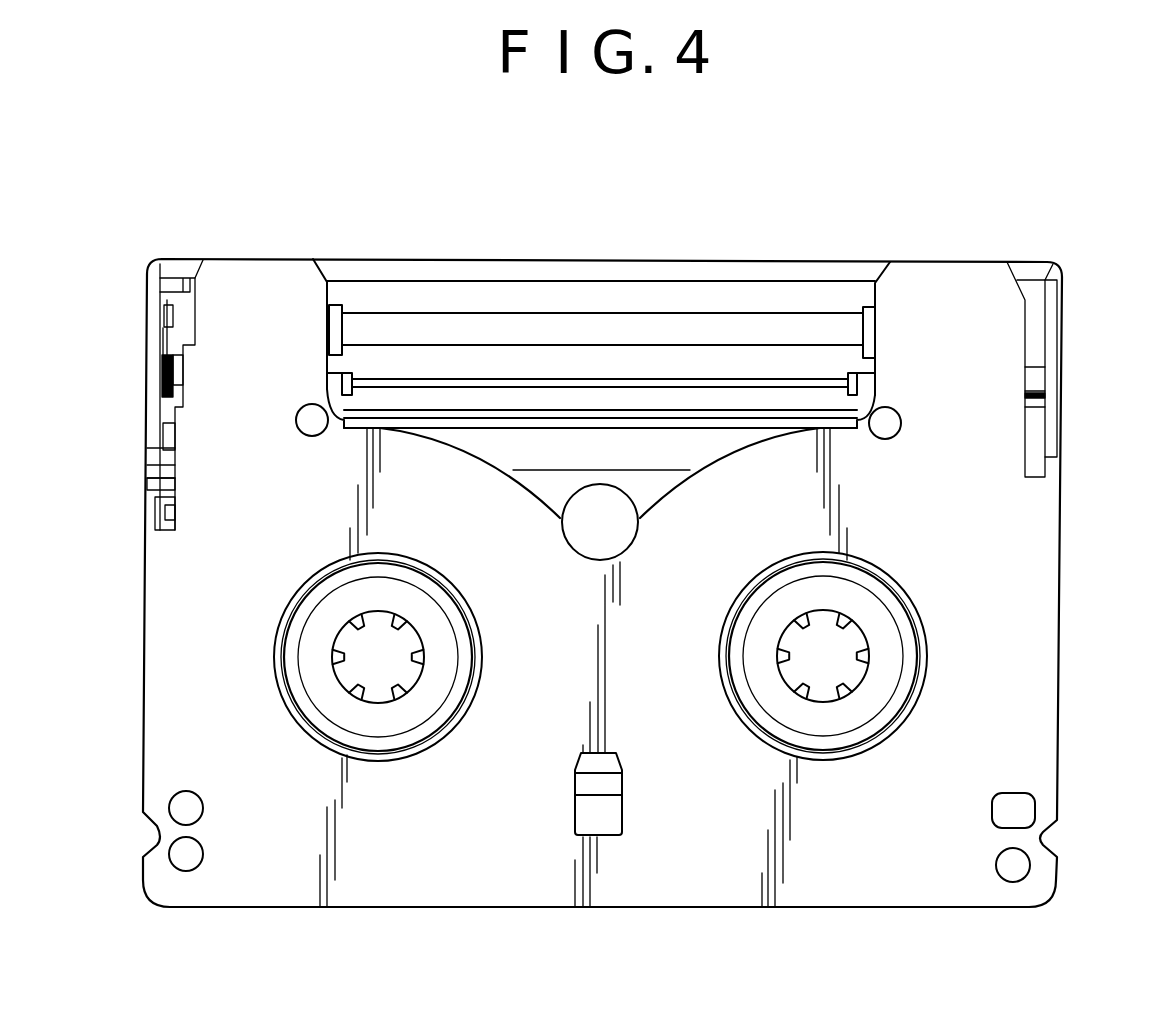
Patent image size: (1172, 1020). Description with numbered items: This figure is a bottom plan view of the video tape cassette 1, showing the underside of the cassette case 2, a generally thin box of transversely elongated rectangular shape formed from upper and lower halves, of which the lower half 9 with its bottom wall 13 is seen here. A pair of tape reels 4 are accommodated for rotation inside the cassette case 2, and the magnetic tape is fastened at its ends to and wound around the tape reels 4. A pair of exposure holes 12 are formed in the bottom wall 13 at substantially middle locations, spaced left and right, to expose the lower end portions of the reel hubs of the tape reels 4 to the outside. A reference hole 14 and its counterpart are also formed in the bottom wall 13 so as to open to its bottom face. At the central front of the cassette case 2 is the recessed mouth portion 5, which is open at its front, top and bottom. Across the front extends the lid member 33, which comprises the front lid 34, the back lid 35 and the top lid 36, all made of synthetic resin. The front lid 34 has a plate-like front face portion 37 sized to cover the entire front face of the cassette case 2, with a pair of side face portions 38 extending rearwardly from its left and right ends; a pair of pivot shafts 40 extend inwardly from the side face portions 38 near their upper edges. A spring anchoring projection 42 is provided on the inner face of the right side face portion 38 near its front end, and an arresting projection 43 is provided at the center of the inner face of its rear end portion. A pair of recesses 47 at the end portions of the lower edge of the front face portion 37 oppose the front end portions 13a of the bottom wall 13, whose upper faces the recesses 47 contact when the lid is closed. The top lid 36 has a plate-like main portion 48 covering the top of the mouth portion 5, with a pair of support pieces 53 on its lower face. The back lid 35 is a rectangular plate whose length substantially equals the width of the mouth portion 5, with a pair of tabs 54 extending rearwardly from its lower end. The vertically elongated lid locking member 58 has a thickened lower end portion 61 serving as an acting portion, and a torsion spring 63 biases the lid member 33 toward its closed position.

The video tape cassette 1 is at (1050, 195).
The cassette case 2 is at (1058, 613).
The tape reels 4 is at (458, 618).
The mouth portion 5 is at (718, 442).
The lower half 9 is at (1042, 745).
The exposure holes 12 is at (387, 780).
The bottom wall 13 is at (1018, 685).
The front end portions of the bottom wall 13a is at (265, 260).
The reference hole 14 is at (310, 432).
The lid member 33 is at (763, 183).
The front lid 34 is at (588, 259).
The back lid 35 is at (725, 322).
The top lid 36 is at (637, 400).
The front face portion 37 is at (470, 280).
The side face portions 38 is at (152, 325).
The pivot shafts 40 is at (178, 375).
The spring anchoring projection 42 is at (160, 313).
The arresting projection 43 is at (165, 433).
The recesses 47 is at (313, 268).
The main portion 48 is at (775, 400).
The support pieces 53 is at (329, 373).
The tabs 54 is at (329, 322).
The lid locking member 58 is at (150, 467).
The lower end portion 61 is at (180, 480).
The torsion spring 63 is at (160, 373).